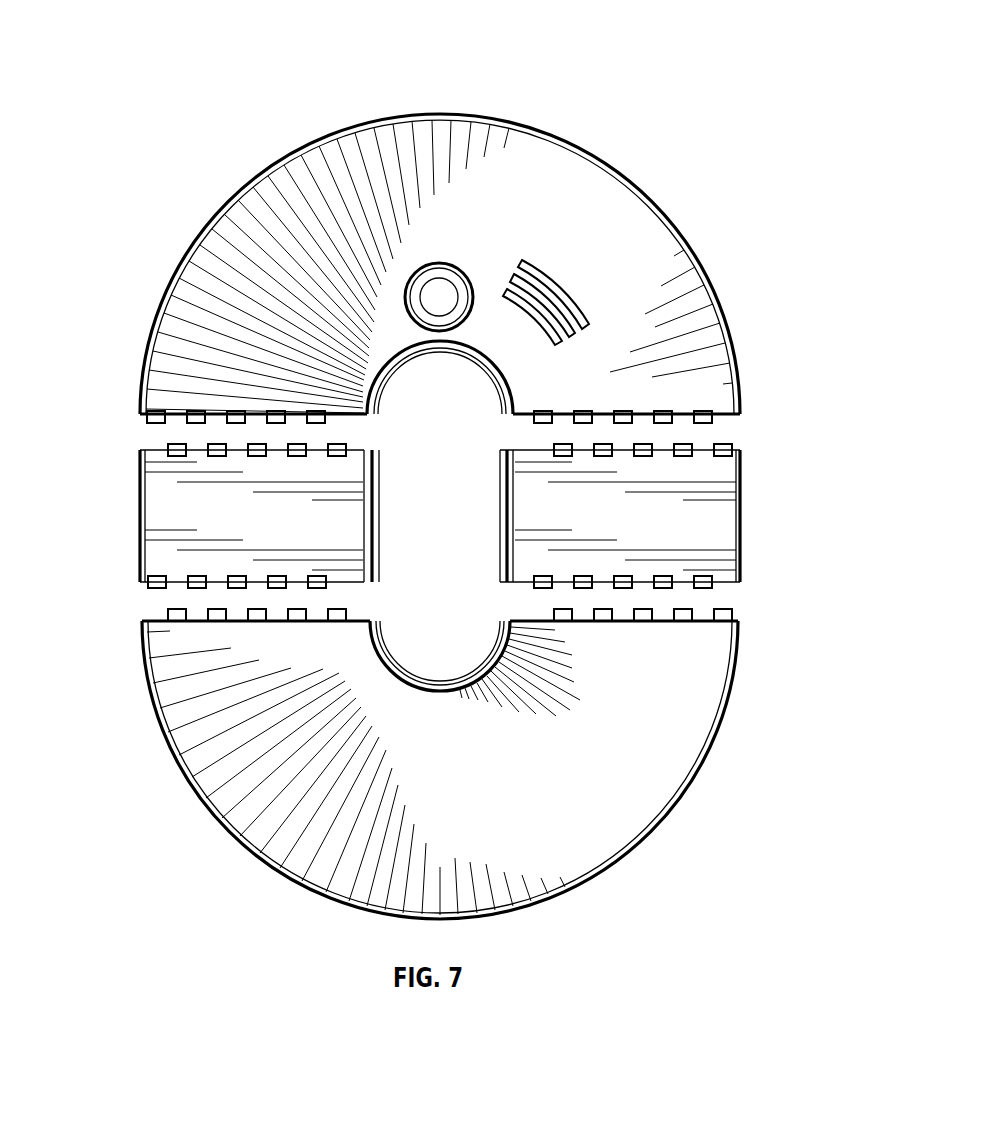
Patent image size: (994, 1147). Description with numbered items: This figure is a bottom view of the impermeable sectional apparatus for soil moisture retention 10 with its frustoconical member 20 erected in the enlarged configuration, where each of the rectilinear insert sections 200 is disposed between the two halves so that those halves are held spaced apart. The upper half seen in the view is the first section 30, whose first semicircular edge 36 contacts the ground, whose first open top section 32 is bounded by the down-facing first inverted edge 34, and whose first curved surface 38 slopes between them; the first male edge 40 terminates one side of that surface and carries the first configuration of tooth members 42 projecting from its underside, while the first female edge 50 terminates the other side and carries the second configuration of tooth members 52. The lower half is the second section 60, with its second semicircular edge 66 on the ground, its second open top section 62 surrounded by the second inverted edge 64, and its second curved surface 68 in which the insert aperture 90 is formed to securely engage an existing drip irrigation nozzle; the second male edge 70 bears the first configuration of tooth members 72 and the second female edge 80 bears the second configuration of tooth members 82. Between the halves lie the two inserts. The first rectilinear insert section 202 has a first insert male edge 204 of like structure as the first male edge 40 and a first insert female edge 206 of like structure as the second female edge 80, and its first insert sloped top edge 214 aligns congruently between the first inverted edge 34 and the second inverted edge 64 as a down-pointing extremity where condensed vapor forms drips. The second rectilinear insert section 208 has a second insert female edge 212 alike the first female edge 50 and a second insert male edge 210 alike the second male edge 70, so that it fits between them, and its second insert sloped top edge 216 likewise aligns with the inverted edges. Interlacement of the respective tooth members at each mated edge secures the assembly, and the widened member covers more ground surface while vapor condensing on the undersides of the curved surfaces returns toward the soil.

The impermeable sectional apparatus for soil moisture retention 10 is at (712, 42).
The frustoconical member 20 is at (666, 108).
The first section 30 is at (439, 258).
The first open top section 32 is at (440, 349).
The first inverted edge 34 is at (494, 368).
The first semicircular edge 36 is at (490, 121).
The first curved surface 38 is at (544, 192).
The first male edge 40 is at (135, 419).
The first configuration of tooth members 42 is at (197, 411).
The first female edge 50 is at (744, 415).
The second configuration of tooth members 52 is at (584, 411).
The second section 60 is at (445, 753).
The second open top section 62 is at (391, 669).
The second inverted edge 64 is at (452, 682).
The second semicircular edge 66 is at (567, 889).
The second curved surface 68 is at (513, 812).
The second male edge 70 is at (746, 619).
The first configuration of tooth members 72 is at (603, 622).
The second female edge 80 is at (135, 609).
The second configuration of tooth members 82 is at (217, 622).
The insert aperture 90 is at (439, 264).
The rectilinear insert sections 200 is at (443, 516).
The first rectilinear insert section 202 is at (628, 516).
The first insert male edge 204 is at (749, 452).
The first insert female edge 206 is at (749, 586).
The second rectilinear insert section 208 is at (254, 516).
The second insert male edge 210 is at (135, 589).
The second insert female edge 212 is at (132, 448).
The first insert sloped top edge 214 is at (501, 520).
The second insert sloped top edge 216 is at (380, 516).